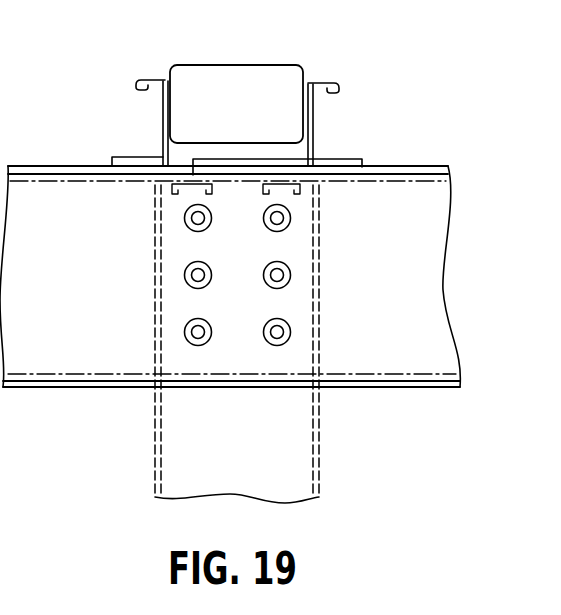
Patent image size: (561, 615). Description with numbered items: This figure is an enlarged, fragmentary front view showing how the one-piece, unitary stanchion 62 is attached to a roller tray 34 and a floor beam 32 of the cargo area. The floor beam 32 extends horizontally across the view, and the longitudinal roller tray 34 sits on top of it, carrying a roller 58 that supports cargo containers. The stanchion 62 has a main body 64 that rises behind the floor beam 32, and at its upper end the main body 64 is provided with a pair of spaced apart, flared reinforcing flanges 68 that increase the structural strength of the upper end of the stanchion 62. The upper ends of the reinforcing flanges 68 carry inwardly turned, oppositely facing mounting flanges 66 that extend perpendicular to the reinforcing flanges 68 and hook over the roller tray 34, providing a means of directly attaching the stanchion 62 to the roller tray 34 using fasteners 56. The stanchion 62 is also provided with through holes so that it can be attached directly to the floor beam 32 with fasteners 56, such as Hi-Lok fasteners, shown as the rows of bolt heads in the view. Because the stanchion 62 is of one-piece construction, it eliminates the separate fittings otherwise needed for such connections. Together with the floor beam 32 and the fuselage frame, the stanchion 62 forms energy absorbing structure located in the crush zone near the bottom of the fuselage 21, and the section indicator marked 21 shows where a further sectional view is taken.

The floor beam 32 is at (415, 215).
The roller tray 34 is at (348, 163).
The roller 58 is at (280, 78).
The mounting flange 66 is at (163, 147).
The fuselage 21 is at (90, 192).
The fastener 56 is at (198, 218).
The reinforcing flange 68 is at (153, 427).
The stanchion 62 is at (293, 453).
The main body 64 is at (238, 353).